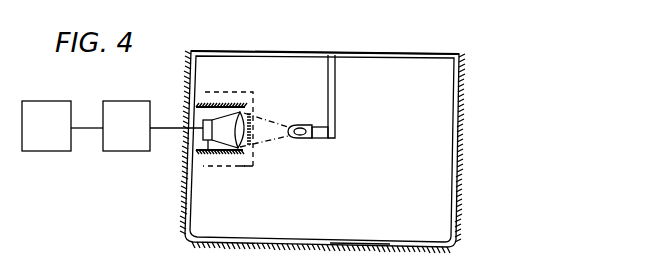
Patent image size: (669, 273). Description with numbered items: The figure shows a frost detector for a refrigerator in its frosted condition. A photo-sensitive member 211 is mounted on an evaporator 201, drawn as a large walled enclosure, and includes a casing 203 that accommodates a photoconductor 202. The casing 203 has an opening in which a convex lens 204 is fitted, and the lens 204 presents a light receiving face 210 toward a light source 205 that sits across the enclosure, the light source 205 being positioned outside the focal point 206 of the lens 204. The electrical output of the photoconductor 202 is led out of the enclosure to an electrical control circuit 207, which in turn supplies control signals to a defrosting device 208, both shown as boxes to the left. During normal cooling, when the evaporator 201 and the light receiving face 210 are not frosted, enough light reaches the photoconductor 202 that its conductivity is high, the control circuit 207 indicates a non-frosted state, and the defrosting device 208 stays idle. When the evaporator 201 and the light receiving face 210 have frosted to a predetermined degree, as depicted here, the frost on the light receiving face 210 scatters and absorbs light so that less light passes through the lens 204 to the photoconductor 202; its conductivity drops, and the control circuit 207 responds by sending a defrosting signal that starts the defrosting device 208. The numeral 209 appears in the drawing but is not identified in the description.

The evaporator 201 is at (458, 150).
The photoconductor 202 is at (208, 150).
The casing 203 is at (223, 104).
The convex lens 204 is at (242, 142).
The light source 205 is at (305, 139).
The focal point 206 is at (280, 126).
The electrical control circuit 207 is at (146, 135).
The defrosting device 208 is at (66, 135).
The bottom wall 209 is at (357, 250).
The light receiving face 210 is at (251, 121).
The photo-sensitive member 211 is at (248, 168).